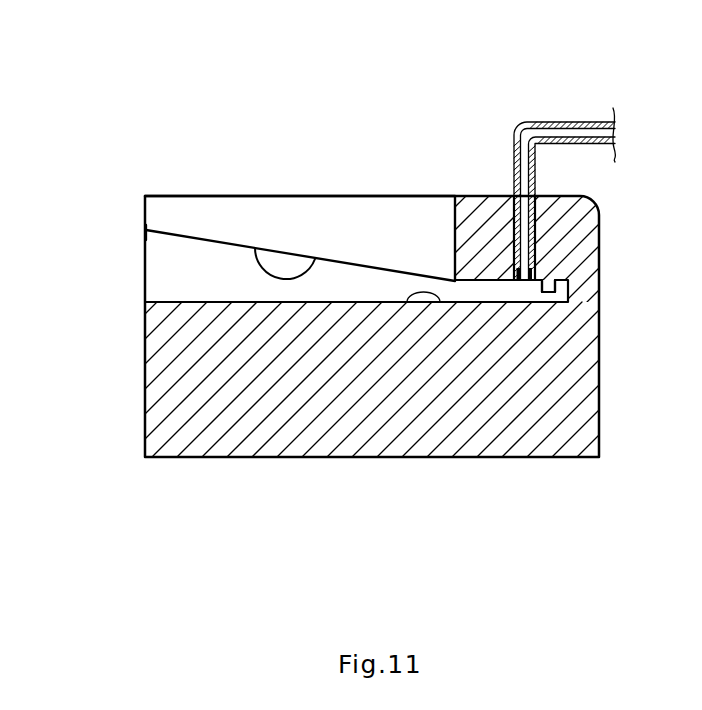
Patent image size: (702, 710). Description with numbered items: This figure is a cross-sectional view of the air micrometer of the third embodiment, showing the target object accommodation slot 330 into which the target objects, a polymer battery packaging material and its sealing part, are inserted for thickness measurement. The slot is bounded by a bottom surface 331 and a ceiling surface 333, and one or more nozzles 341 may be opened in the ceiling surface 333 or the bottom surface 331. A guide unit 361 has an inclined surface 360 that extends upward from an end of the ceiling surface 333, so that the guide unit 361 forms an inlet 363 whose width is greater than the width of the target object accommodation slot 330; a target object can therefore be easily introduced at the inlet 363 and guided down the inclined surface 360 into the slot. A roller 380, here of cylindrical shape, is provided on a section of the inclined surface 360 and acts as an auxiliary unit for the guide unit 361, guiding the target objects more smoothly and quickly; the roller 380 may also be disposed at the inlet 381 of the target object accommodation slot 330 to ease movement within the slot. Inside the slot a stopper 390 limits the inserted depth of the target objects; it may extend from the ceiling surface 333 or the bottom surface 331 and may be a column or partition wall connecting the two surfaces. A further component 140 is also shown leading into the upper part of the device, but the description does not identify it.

The cable 140 is at (563, 122).
The target object accommodation slot 330 is at (493, 292).
The bottom surface 331 is at (407, 302).
The ceiling surface 333 is at (500, 280).
The nozzle 341 is at (540, 277).
The inclined surface 360 is at (345, 228).
The guide unit 361 is at (210, 216).
The inlet 363 is at (153, 250).
The roller 380 is at (285, 270).
The inlet 381 is at (477, 280).
The stopper 390 is at (556, 287).